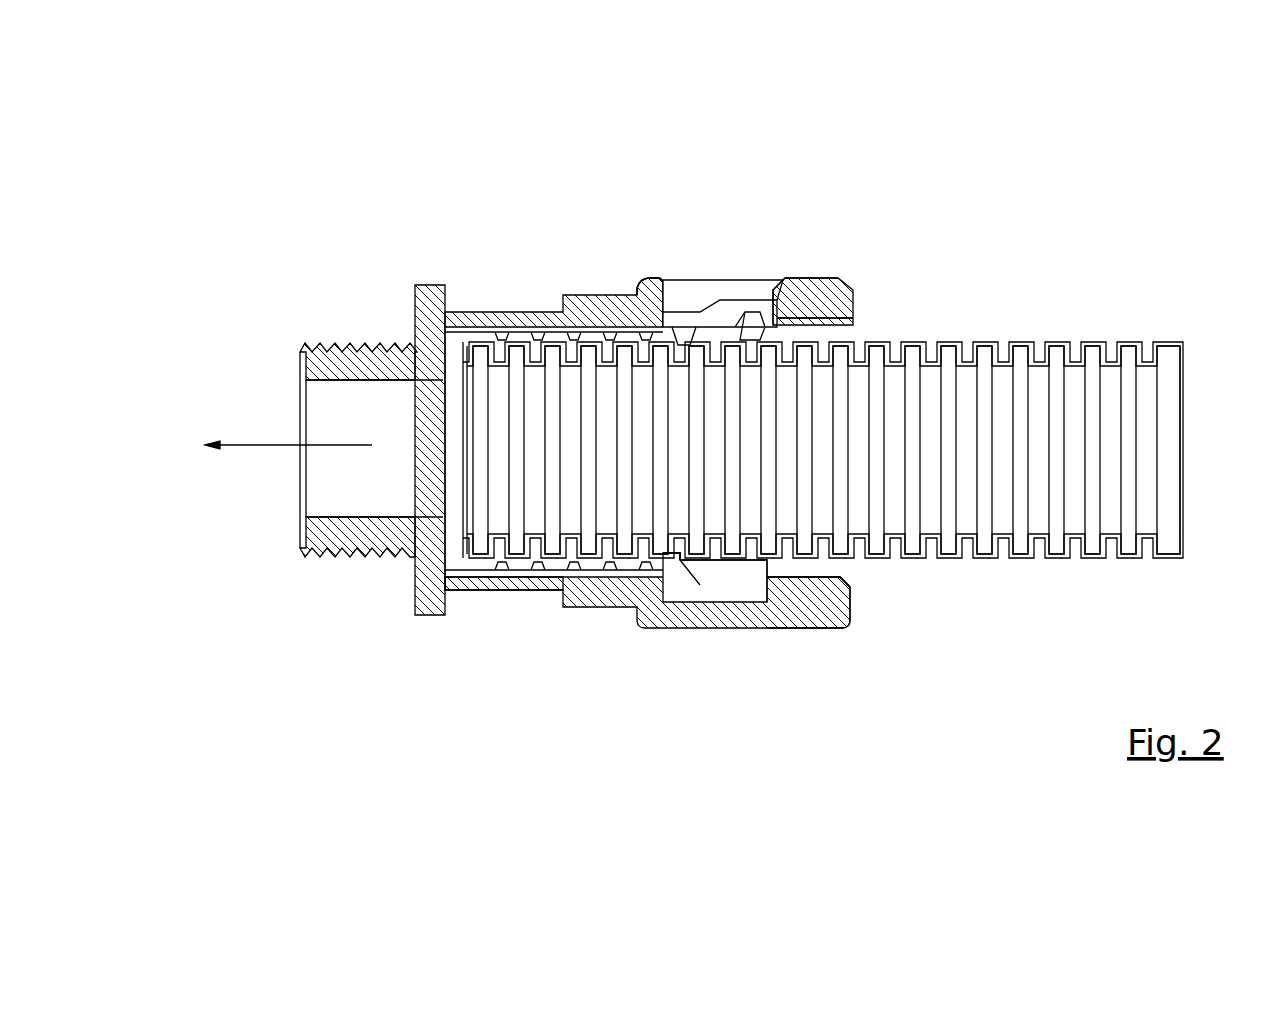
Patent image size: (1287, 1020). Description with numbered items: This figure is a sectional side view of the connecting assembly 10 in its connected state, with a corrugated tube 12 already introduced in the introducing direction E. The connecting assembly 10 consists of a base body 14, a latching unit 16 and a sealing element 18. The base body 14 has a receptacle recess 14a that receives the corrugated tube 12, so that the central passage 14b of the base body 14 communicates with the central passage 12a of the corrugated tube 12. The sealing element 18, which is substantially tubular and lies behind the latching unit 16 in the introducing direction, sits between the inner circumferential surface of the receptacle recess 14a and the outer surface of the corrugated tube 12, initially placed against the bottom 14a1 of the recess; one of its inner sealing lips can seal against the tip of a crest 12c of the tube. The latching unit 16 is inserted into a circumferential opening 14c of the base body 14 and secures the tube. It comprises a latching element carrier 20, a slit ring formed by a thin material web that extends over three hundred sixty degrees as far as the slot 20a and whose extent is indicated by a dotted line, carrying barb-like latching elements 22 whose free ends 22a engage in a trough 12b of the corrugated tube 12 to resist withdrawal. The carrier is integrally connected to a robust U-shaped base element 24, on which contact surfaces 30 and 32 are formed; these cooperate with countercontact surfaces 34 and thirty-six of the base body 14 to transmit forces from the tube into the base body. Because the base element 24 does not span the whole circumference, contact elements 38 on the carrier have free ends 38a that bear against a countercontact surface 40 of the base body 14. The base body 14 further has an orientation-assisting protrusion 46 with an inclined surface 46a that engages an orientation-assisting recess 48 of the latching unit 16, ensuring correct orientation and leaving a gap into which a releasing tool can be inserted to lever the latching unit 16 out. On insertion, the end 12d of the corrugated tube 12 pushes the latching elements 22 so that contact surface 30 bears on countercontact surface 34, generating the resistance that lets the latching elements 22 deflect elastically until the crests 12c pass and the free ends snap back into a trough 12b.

The connecting assembly 10 is at (280, 201).
The corrugated tube 12 is at (1093, 373).
The central passage of the corrugated tube 12a is at (1147, 477).
The trough of the corrugated tube 12b is at (671, 556).
The crest of the corrugated tube 12c is at (1053, 558).
The end of the corrugated tube 12d is at (415, 328).
The base body 14 is at (325, 547).
The receptacle recess 14a is at (490, 583).
The bottom of the receptacle recess 14a1 is at (453, 380).
The central passage of the base body 14b is at (323, 490).
The circumferential opening 14c is at (688, 308).
The latching unit 16 is at (745, 285).
The sealing element 18 is at (500, 337).
The latching element carrier 20 is at (743, 575).
The slot of the latching element carrier 20a is at (723, 581).
The latching element 22 is at (710, 570).
The free end of the latching element 22a is at (668, 565).
The base element 24 is at (773, 290).
The contact surface 30 is at (660, 285).
The contact surface 32 is at (777, 308).
The countercontact surface 34 is at (650, 302).
The contact element 38 is at (737, 577).
The free end of the contact element 38a is at (772, 592).
The countercontact surface 40 is at (808, 582).
The orientation-assisting protrusion 46 is at (840, 285).
The inclined surface 46a is at (800, 288).
The orientation-assisting recess 48 is at (790, 292).